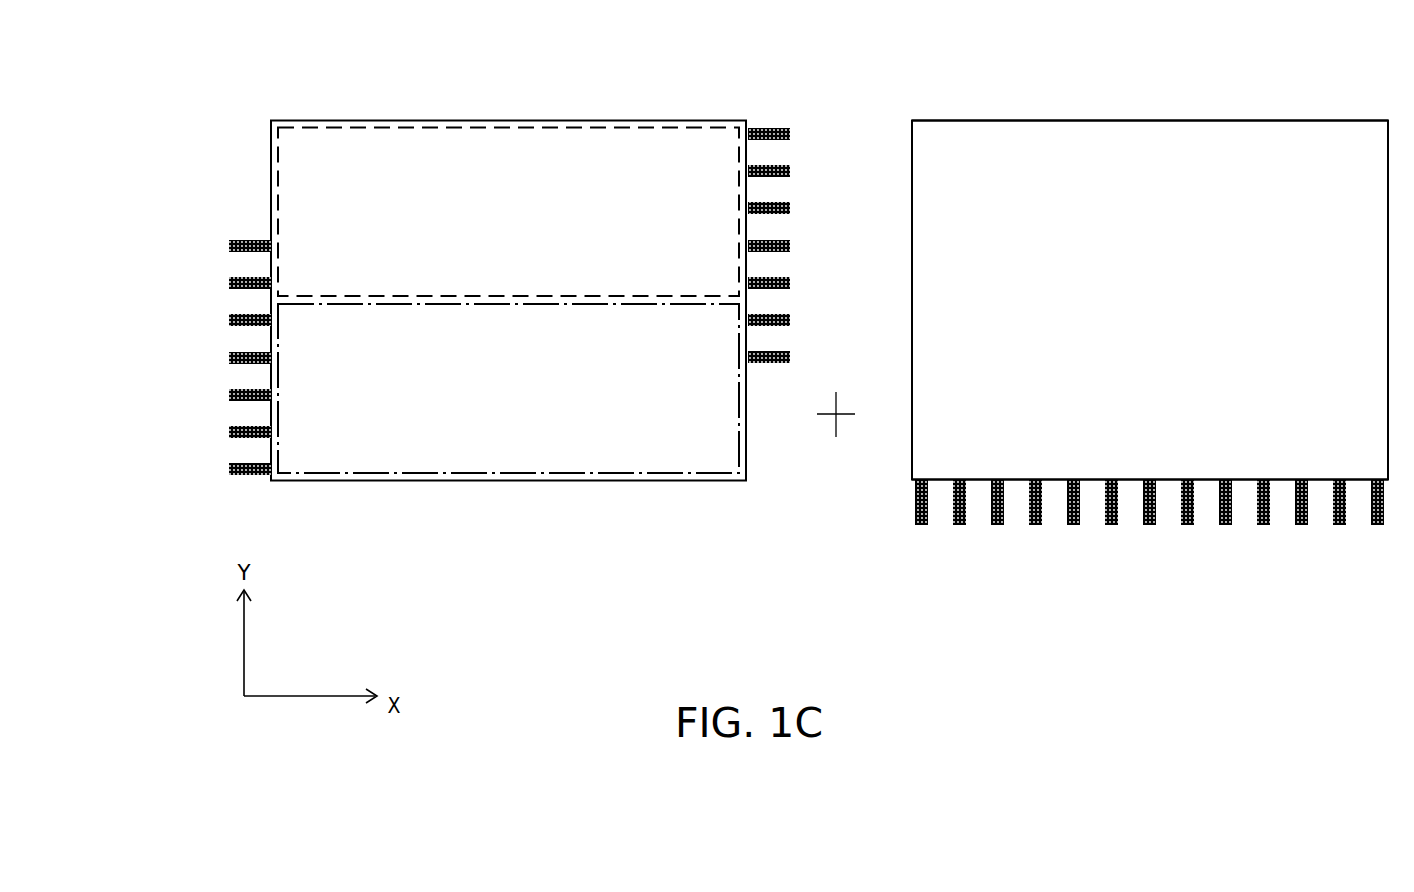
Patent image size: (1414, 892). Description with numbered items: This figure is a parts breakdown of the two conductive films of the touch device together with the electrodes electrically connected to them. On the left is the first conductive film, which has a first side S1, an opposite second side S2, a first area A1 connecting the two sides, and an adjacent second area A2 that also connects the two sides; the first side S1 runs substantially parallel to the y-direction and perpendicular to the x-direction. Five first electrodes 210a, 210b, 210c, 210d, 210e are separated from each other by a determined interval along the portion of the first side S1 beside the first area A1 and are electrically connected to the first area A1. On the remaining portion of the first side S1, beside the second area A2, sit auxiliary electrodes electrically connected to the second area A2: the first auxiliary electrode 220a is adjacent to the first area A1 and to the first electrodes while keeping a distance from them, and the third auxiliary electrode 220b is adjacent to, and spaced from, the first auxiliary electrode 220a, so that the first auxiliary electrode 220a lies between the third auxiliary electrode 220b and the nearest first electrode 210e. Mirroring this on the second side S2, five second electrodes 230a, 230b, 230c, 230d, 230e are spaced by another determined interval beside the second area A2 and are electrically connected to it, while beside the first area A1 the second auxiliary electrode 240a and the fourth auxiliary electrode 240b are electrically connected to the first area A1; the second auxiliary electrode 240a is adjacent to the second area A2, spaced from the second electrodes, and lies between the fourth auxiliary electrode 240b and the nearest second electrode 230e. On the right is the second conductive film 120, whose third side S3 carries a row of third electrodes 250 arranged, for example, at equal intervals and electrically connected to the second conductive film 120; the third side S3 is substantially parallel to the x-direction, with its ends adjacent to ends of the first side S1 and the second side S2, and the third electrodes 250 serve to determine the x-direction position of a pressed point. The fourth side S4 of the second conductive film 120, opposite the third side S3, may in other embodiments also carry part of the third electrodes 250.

The second conductive film 120 is at (1247, 150).
The first electrode 210a is at (240, 463).
The first electrode 210b is at (240, 426).
The first electrode 210c is at (240, 389).
The first electrode 210d is at (240, 352).
The first electrode 210e is at (240, 314).
The first auxiliary electrode 220a is at (240, 277).
The third auxiliary electrode 220b is at (240, 240).
The second electrode 230a is at (778, 128).
The second electrode 230b is at (778, 165).
The second electrode 230c is at (778, 202).
The second electrode 230d is at (778, 240).
The second electrode 230e is at (778, 277).
The second auxiliary electrode 240a is at (778, 314).
The fourth auxiliary electrode 240b is at (778, 351).
The third electrodes 250 is at (915, 520).
The first side S1 is at (271, 183).
The second side S2 is at (747, 432).
The third side S3 is at (1127, 483).
The fourth side S4 is at (1103, 119).
The first area A1 is at (519, 473).
The second area A2 is at (331, 127).